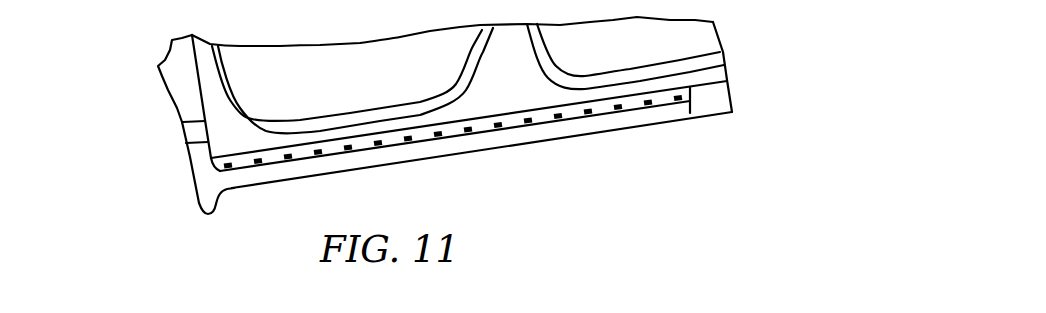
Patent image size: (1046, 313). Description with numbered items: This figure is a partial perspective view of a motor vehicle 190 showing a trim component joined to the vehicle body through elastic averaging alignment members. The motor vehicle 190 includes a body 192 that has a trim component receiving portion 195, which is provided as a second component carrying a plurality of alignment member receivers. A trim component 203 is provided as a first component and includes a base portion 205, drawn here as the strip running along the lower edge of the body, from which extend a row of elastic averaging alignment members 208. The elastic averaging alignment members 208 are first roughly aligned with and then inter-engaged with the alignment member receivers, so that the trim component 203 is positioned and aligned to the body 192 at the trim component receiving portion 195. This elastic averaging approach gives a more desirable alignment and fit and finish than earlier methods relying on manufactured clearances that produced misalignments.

The motor vehicle 190 is at (727, 48).
The body 192 is at (188, 159).
The trim component receiving portion 195 is at (702, 94).
The trim component 203 is at (468, 151).
The base portion 205 is at (631, 105).
The elastic averaging alignment members 208 is at (527, 121).